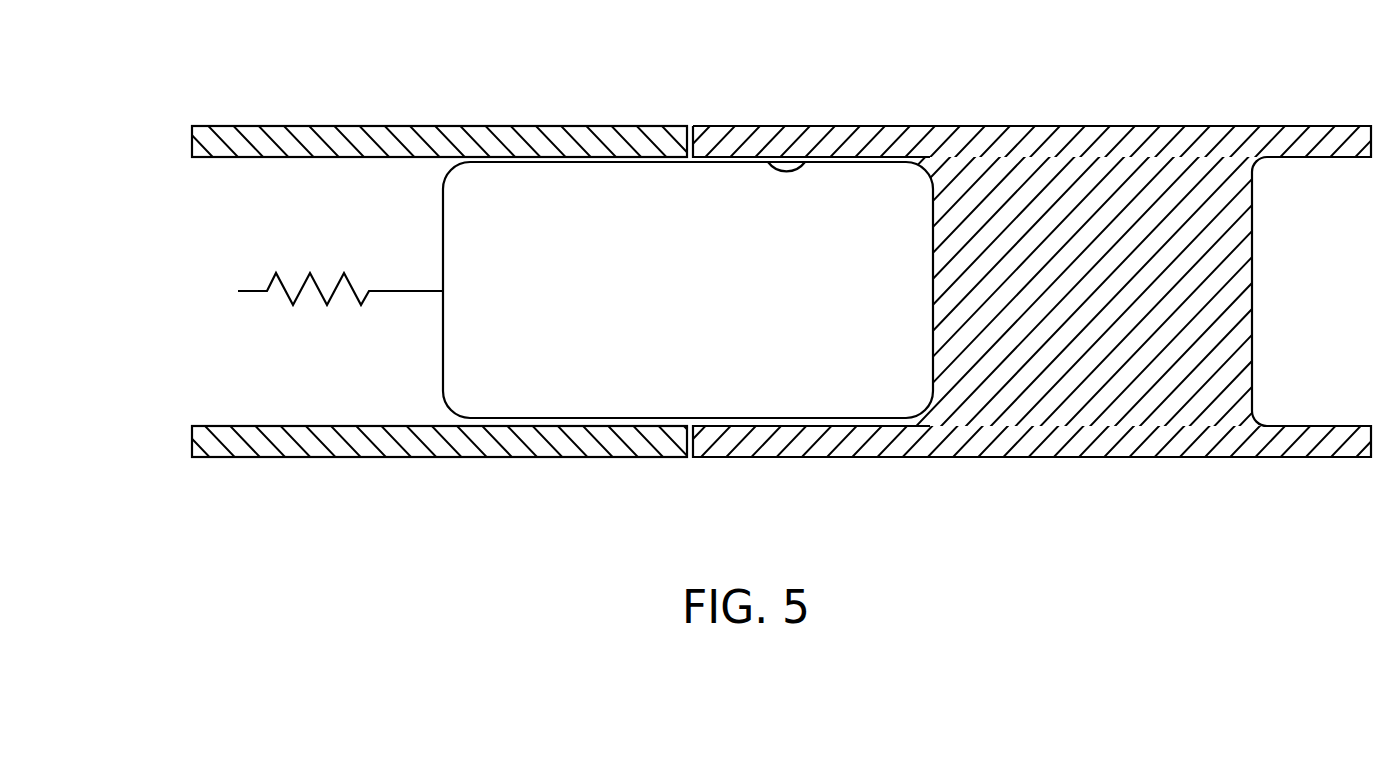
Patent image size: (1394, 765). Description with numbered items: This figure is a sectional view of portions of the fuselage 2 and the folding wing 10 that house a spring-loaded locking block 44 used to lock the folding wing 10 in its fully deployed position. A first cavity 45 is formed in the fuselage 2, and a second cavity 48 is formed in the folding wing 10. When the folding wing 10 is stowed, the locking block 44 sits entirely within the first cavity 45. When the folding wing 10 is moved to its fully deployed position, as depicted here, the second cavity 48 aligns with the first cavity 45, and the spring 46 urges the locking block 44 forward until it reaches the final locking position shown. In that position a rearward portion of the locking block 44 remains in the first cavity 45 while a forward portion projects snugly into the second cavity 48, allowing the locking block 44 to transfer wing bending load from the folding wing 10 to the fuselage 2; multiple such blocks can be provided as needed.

The fuselage 2 is at (449, 250).
The folding wing 10 is at (1174, 113).
The locking block 44 is at (575, 418).
The first cavity 45 is at (268, 160).
The spring 46 is at (318, 290).
The second cavity 48 is at (806, 162).